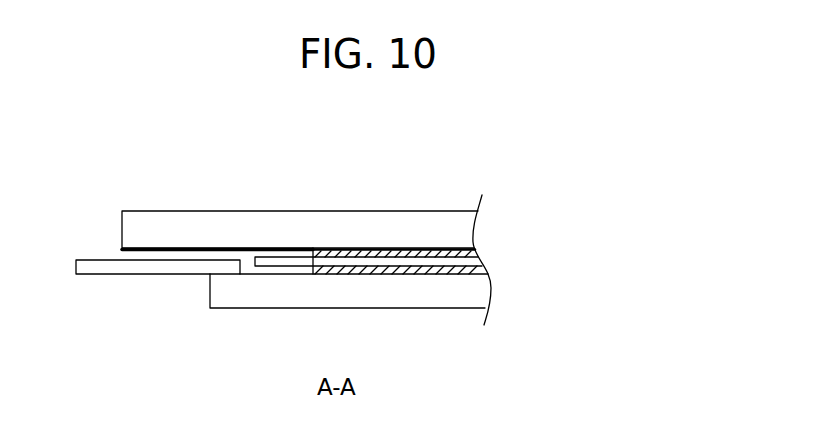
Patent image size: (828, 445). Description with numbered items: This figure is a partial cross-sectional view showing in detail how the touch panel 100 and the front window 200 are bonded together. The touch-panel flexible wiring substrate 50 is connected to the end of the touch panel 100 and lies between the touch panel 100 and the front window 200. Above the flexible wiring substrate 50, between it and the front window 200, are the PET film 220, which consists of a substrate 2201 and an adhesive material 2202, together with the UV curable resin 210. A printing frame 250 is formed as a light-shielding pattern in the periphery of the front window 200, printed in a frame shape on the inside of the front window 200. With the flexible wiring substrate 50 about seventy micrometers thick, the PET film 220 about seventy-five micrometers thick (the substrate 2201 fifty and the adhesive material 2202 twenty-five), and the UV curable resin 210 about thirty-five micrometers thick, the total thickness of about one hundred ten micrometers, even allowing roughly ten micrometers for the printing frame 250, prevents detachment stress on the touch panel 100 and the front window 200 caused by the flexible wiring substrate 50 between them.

The touch-panel flexible wiring substrate 50 is at (144, 268).
The touch panel 100 is at (408, 297).
The front window 200 is at (360, 222).
The UV curable resin 210 is at (475, 251).
The PET film 220 is at (488, 272).
The substrate 2201 is at (478, 263).
The adhesive material 2202 is at (481, 271).
The printing frame 250 is at (137, 252).